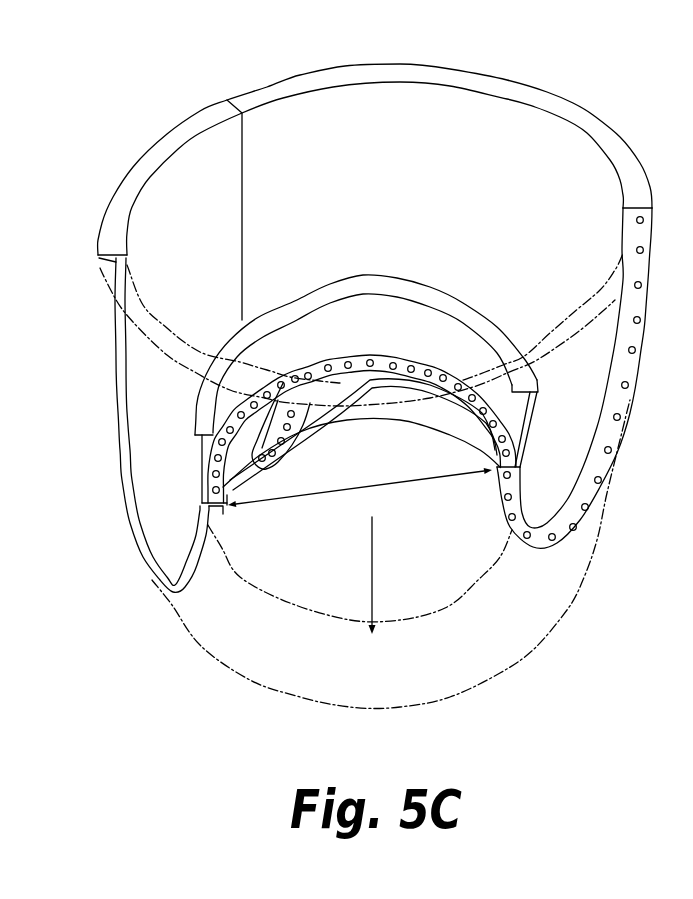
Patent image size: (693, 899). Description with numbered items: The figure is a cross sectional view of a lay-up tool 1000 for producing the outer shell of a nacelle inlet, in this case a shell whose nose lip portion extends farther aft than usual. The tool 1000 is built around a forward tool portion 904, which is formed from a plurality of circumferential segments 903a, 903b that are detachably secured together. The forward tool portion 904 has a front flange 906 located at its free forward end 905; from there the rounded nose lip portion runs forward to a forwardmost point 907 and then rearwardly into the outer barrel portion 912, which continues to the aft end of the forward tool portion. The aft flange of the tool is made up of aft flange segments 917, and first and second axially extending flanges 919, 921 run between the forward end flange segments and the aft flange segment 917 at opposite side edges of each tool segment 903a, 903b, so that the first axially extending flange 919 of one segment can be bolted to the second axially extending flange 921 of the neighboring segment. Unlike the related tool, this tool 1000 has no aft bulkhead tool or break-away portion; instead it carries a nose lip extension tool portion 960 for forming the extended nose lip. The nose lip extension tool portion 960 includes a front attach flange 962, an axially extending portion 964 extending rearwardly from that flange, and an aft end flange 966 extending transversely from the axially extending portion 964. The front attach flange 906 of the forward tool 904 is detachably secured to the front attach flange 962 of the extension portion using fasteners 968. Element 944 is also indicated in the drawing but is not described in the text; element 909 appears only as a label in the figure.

The lay-up tool 1000 is at (158, 70).
The rim / ring 944 is at (88, 237).
The aft flange segment 917 is at (96, 256).
The circumferential segment 903a is at (168, 405).
The circumferential segment 903b is at (556, 190).
The outer barrel portion 912 is at (112, 378).
The forward tool portion 904 is at (103, 425).
The nose lip extension tool portion 960 is at (374, 371).
The aft end flange 966 is at (480, 311).
The fasteners 968 is at (353, 360).
The axially extending portion 964 is at (197, 458).
The front attach flange 962 is at (234, 500).
The free forward end 905 is at (230, 508).
The front flange 906 is at (227, 521).
The second axially extending flange 921 is at (310, 436).
The forwardmost point 907 is at (261, 514).
The strap inner line 909 is at (286, 398).
The first axially extending flange 919 is at (272, 461).